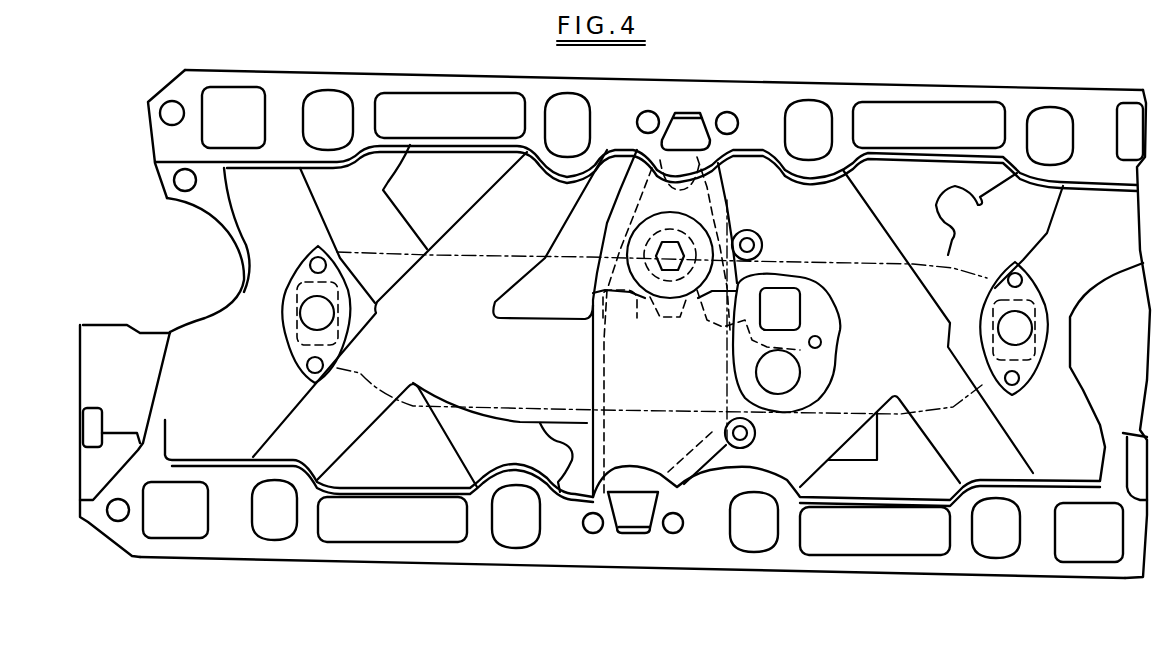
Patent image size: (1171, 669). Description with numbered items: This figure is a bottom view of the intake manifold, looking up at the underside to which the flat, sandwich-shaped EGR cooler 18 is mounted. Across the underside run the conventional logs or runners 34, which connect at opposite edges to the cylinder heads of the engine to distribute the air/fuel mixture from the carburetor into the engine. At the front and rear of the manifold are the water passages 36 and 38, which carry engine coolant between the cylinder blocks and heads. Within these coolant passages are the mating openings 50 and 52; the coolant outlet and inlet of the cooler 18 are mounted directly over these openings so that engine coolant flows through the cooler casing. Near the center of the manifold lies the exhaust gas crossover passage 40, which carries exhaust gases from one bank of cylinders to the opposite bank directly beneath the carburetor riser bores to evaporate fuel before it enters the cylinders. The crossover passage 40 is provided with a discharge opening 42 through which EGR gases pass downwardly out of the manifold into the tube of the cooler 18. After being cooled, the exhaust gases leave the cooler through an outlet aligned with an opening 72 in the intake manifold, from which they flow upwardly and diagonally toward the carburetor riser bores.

The EGR cooler 18 is at (485, 256).
The runners 34 is at (388, 222).
The front water passage 36 is at (270, 237).
The rear water passage 38 is at (1083, 282).
The exhaust gas crossover passage 40 is at (696, 323).
The discharge opening 42 is at (778, 372).
The opening in front coolant passage 50 is at (312, 318).
The opening in rear coolant passage 52 is at (1017, 333).
The opening in intake manifold 72 is at (787, 307).